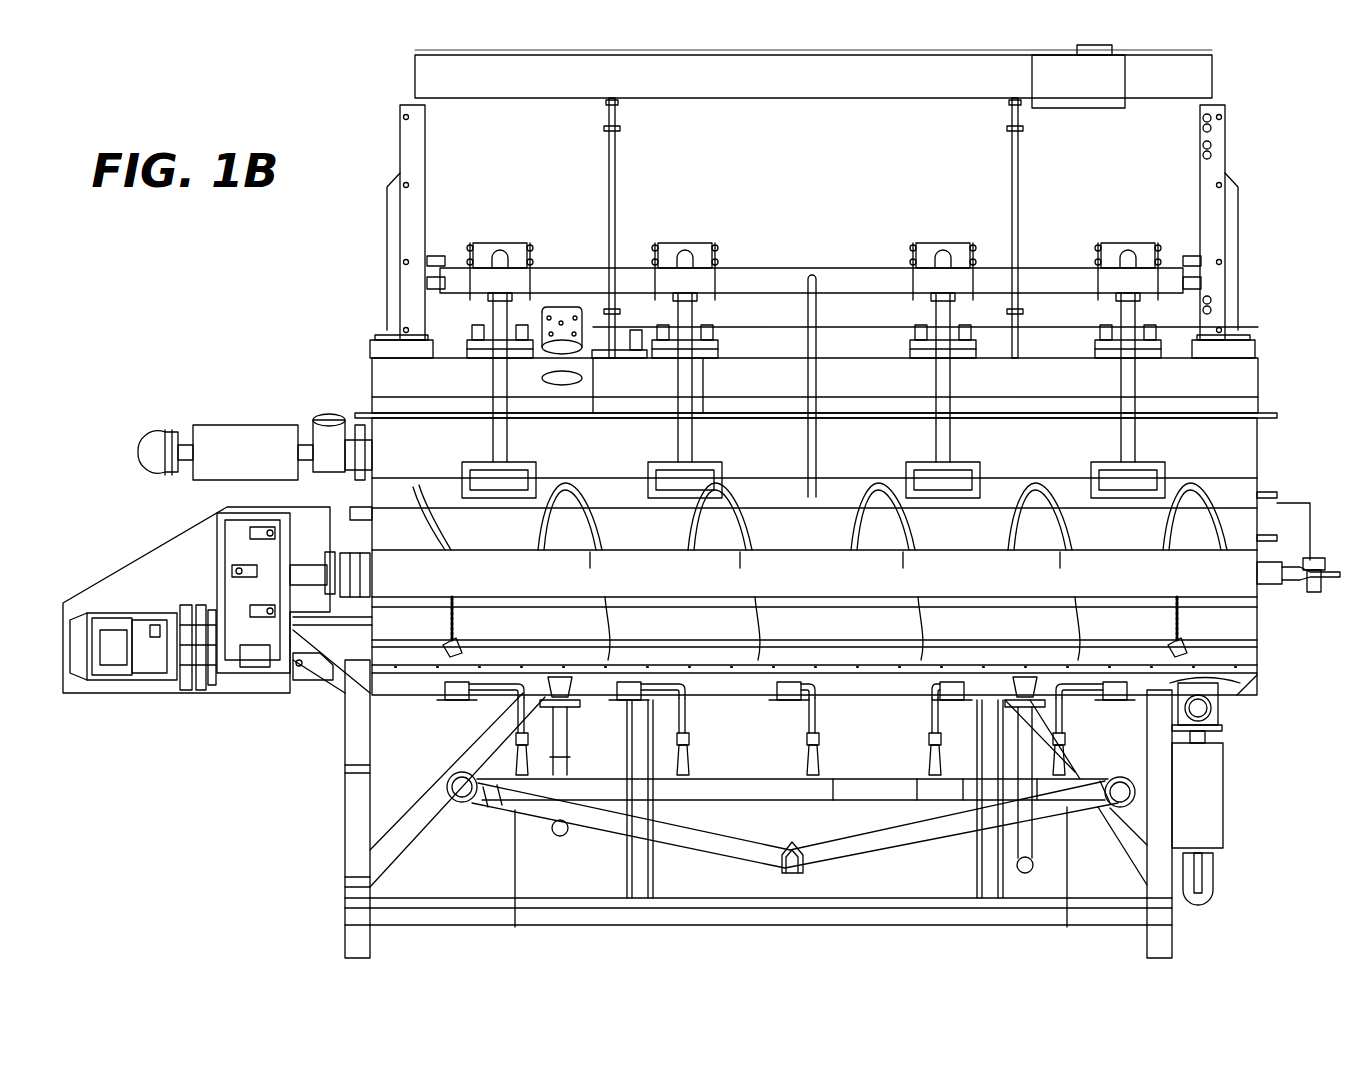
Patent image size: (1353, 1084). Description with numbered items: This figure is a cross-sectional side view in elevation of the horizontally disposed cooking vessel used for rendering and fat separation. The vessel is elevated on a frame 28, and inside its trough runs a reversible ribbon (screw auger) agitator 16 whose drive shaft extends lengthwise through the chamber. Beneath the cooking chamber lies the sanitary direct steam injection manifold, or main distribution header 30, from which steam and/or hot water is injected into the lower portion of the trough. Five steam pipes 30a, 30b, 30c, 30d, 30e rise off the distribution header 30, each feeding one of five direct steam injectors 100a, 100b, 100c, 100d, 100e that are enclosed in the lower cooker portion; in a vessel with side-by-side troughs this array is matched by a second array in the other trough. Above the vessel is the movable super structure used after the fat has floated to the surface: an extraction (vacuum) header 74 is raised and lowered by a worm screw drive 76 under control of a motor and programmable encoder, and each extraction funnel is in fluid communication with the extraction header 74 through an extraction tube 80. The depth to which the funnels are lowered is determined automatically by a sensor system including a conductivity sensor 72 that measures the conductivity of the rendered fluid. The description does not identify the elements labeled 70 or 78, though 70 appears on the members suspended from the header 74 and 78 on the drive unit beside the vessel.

The ribbon agitator 16 is at (1198, 487).
The frame 28 is at (352, 705).
The direct steam injection manifold 30 is at (1198, 583).
The steam pipe 30a is at (450, 773).
The steam pipe 30b is at (628, 700).
The steam pipe 30c is at (783, 700).
The steam pipe 30d is at (1057, 760).
The steam pipe 30e is at (1128, 785).
The paddle assemblies 70 is at (655, 465).
The conductivity sensor 72 is at (820, 465).
The extraction header 74 is at (565, 280).
The worm screw drive 76 is at (1105, 82).
The motor 78 is at (272, 425).
The extraction tube 80 is at (683, 305).
The direct steam injector 100a is at (480, 698).
The direct steam injector 100b is at (527, 755).
The direct steam injector 100c is at (685, 760).
The direct steam injector 100d is at (927, 693).
The direct steam injector 100e is at (1152, 690).